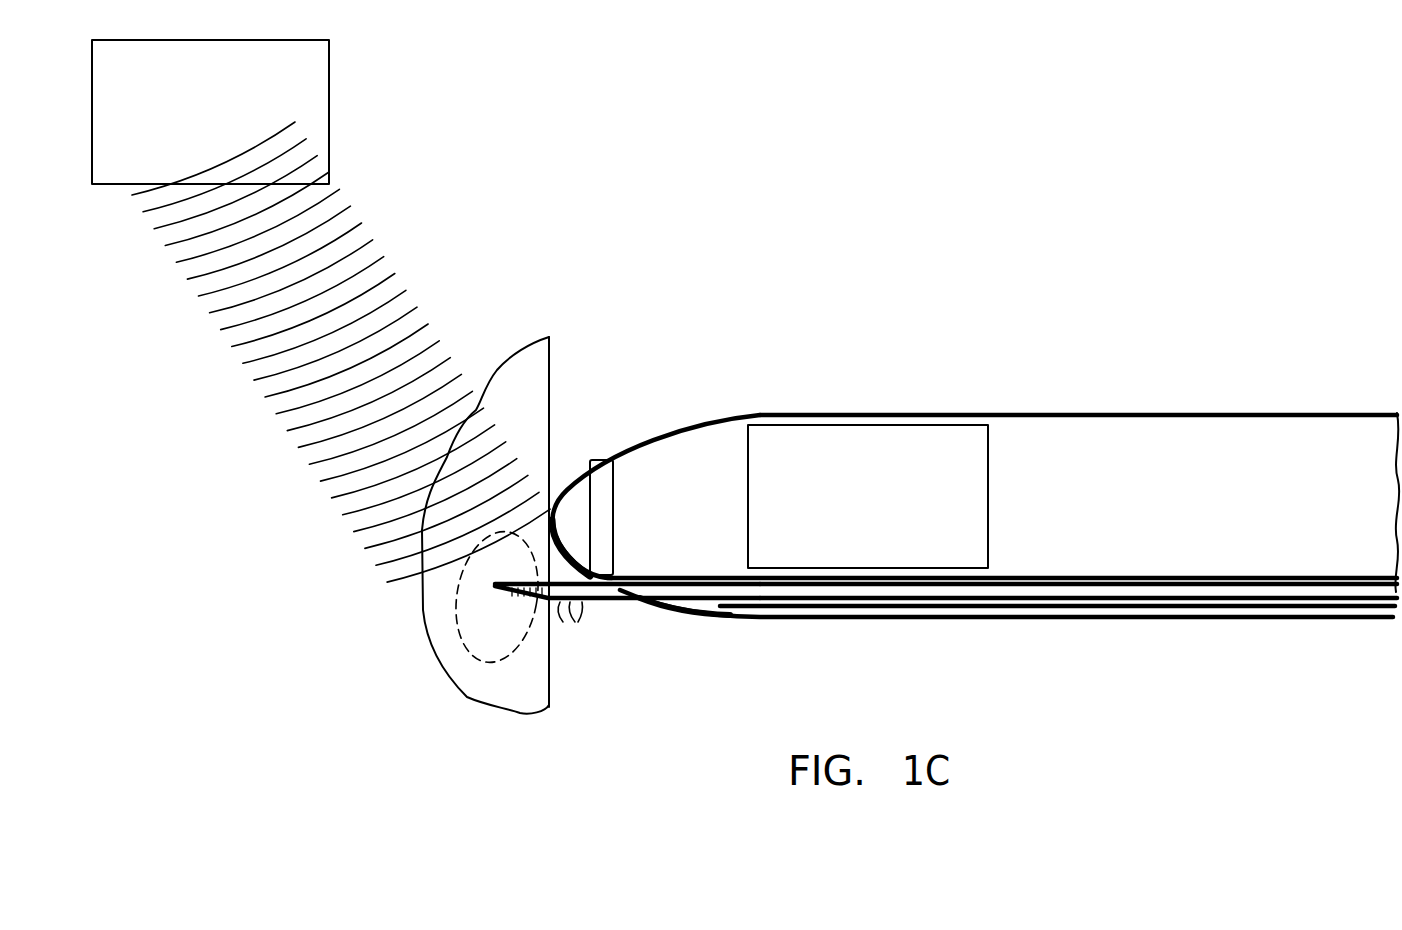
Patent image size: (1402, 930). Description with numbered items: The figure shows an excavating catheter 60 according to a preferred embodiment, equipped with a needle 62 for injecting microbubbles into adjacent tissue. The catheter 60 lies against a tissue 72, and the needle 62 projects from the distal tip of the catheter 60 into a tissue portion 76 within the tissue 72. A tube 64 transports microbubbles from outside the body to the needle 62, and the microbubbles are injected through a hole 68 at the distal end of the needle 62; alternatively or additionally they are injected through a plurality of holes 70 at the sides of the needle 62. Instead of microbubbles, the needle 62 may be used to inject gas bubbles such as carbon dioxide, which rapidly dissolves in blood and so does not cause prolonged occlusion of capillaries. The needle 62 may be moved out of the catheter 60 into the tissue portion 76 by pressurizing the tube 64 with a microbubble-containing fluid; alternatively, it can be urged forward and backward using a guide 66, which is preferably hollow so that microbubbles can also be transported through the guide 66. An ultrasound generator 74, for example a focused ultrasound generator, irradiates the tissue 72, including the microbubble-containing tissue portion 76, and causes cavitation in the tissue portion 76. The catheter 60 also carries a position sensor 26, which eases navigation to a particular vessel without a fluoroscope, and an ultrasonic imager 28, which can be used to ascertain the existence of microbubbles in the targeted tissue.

The position sensor 26 is at (930, 426).
The ultrasonic imager 28 is at (618, 466).
The catheter 60 is at (768, 400).
The needle 62 is at (626, 600).
The tube 64 is at (1160, 606).
The guide 66 is at (1101, 587).
The hole 68 is at (516, 587).
The holes 70 is at (574, 625).
The tissue 72 is at (530, 411).
The ultrasound generator 74 is at (321, 311).
The tissue portion 76 is at (518, 575).